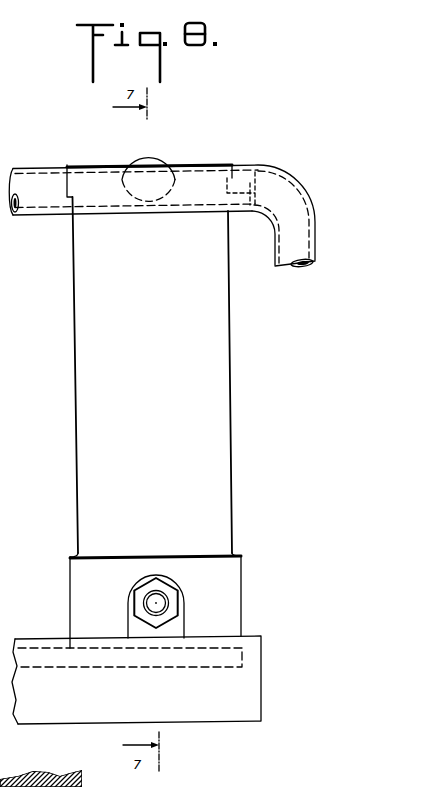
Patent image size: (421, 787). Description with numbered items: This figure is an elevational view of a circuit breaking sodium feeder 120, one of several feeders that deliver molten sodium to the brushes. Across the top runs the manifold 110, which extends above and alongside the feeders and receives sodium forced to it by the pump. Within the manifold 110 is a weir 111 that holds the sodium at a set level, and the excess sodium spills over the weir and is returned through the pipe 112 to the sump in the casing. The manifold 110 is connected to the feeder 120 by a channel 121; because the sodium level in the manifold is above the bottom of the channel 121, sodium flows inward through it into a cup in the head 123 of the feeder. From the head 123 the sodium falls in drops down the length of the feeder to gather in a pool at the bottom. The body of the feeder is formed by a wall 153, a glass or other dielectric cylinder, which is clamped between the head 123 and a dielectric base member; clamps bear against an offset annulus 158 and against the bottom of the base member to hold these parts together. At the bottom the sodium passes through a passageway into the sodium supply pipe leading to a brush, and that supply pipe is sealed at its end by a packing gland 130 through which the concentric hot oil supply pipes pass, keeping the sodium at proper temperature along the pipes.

The manifold 110 is at (244, 174).
The weir 111 is at (262, 180).
The pipe 112 is at (316, 226).
The feeder 120 is at (88, 162).
The channel 121 is at (150, 158).
The head 123 is at (115, 165).
The packing gland 130 is at (170, 603).
The wall 153 is at (82, 392).
The offset annulus 158 is at (70, 560).